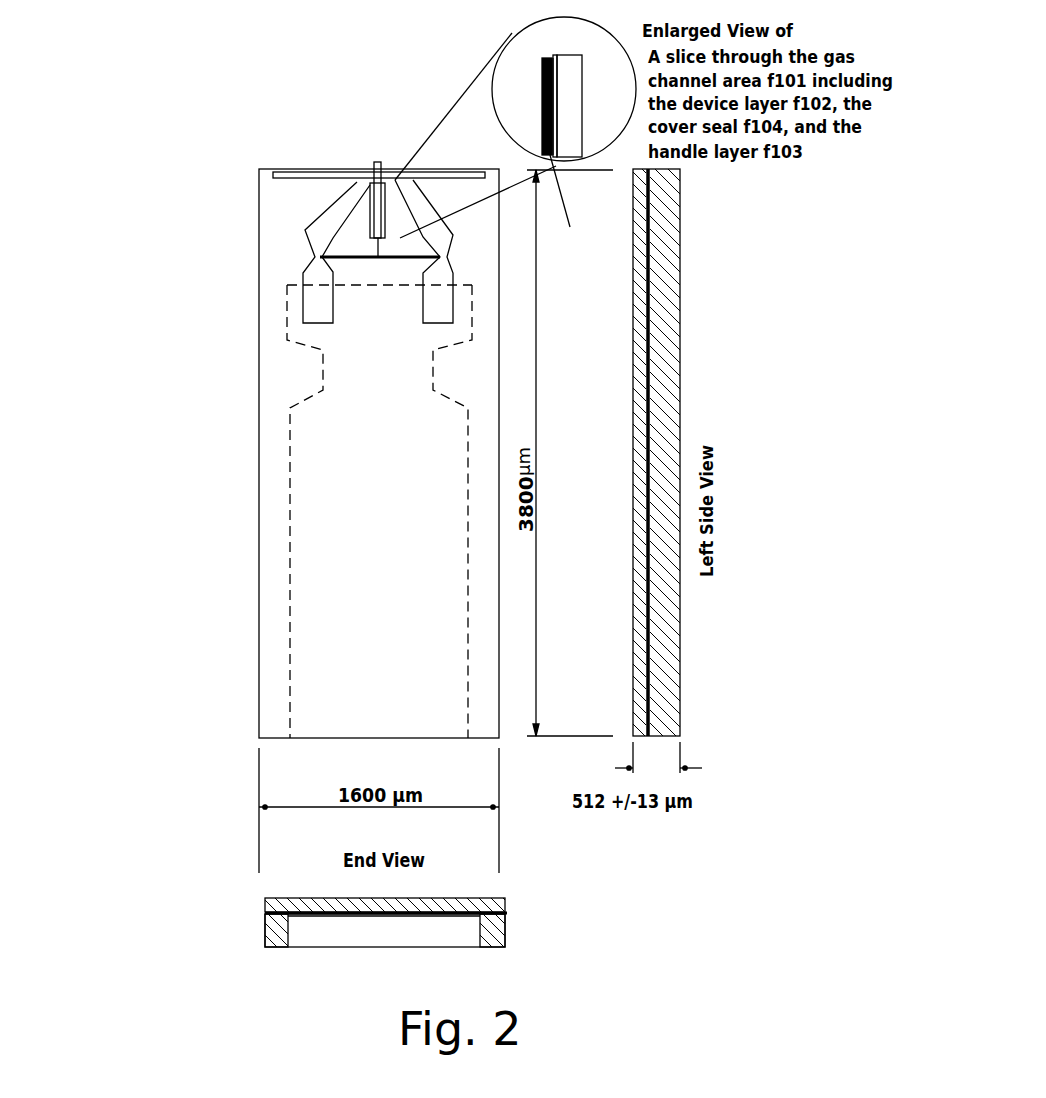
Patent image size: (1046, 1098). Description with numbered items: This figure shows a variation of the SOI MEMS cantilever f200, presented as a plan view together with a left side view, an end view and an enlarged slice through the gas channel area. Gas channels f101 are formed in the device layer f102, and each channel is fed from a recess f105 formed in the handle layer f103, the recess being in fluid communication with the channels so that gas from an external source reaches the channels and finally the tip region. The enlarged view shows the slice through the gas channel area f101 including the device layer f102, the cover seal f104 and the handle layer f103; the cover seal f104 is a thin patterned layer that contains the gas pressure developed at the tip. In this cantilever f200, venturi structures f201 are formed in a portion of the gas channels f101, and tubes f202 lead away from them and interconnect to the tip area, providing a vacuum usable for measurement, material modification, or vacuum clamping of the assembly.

The gas channels f101 is at (543, 65).
The device layer f102 is at (633, 246).
The handle layer f103 is at (342, 922).
The cover seal f104 is at (537, 112).
The recess f105 is at (384, 838).
The cantilever f200 is at (344, 453).
The venturi structures f201 is at (422, 272).
The tubes f202 is at (373, 250).